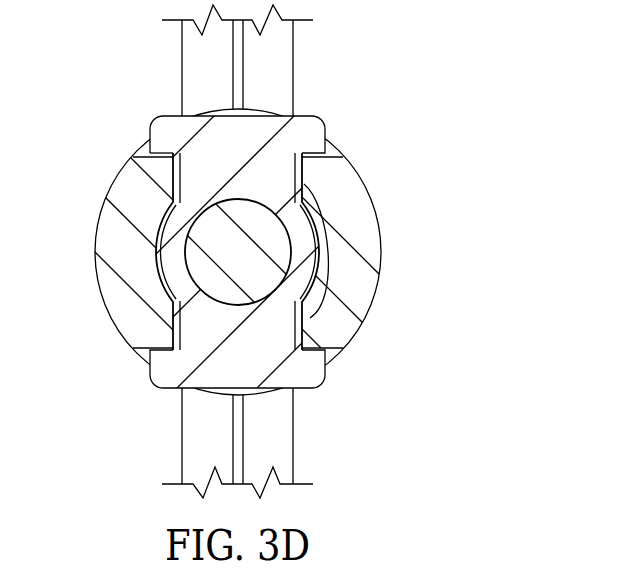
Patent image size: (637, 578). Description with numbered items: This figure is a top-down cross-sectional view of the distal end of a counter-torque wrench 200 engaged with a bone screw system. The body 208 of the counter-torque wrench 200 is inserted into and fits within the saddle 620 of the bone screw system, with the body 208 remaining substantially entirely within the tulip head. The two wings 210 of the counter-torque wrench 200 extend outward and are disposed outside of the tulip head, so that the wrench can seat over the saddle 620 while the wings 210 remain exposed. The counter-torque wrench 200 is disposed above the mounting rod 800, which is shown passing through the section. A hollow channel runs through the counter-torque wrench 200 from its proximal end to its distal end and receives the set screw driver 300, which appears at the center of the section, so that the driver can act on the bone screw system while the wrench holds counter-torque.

The counter-torque wrench 200 is at (318, 278).
The body 208 is at (289, 169).
The wings 210 is at (347, 102).
The set screw driver 300 is at (198, 277).
The saddle 620 is at (380, 253).
The mounting rod 800 is at (322, 48).